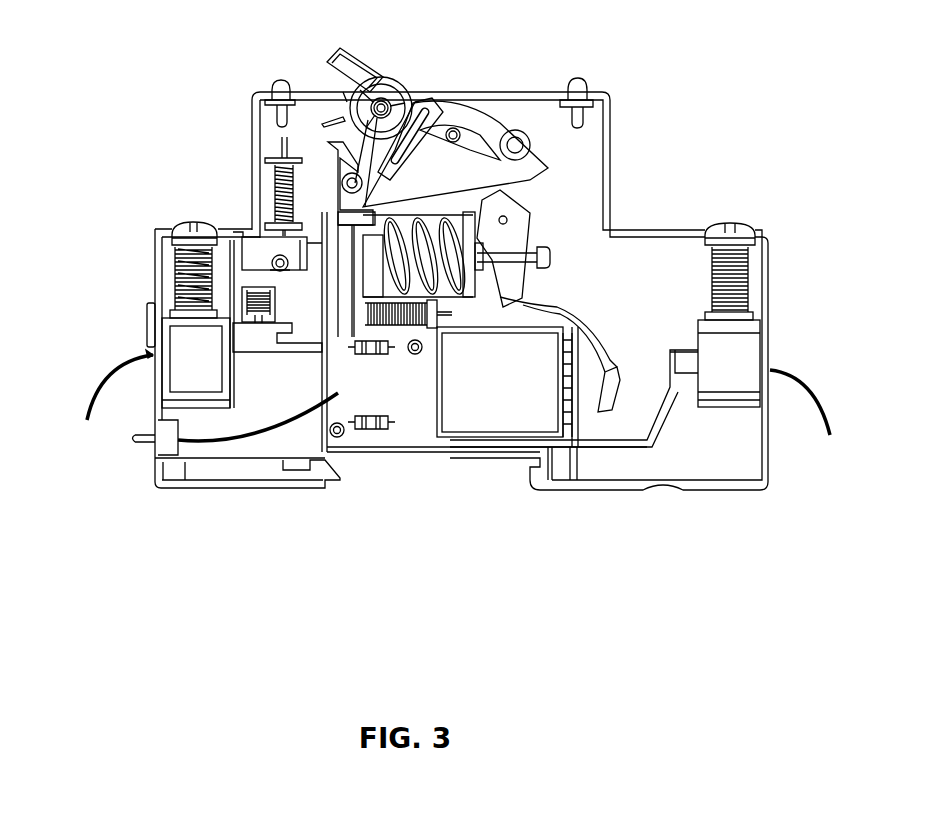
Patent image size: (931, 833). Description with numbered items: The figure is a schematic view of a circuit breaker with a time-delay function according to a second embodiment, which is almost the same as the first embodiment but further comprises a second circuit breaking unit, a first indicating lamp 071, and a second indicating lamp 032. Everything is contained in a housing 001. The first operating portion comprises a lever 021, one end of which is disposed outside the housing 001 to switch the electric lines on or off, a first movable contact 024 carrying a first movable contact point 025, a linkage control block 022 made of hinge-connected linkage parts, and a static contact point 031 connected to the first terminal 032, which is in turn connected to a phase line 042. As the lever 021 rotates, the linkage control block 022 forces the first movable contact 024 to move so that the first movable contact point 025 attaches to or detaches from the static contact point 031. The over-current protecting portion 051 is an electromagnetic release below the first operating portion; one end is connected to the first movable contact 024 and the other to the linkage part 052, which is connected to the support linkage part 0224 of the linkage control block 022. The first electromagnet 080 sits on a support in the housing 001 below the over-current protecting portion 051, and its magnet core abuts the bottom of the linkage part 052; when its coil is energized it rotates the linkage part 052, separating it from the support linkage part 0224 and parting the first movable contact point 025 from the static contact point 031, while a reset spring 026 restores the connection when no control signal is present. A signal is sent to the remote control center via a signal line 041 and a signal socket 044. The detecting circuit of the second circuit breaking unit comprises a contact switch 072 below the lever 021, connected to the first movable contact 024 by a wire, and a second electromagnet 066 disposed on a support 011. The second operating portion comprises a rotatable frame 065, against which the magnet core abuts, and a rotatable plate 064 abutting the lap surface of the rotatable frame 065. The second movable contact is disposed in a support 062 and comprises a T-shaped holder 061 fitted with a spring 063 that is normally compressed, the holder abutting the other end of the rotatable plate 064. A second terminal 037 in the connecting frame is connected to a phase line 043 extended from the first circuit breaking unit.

The housing 001 is at (710, 487).
The support 011 is at (273, 152).
The lever 021 is at (363, 63).
The linkage control block 022 is at (440, 117).
The support linkage part 0224 is at (420, 158).
The first movable contact 024 is at (572, 305).
The first movable contact point 025 is at (615, 377).
The reset spring 026 is at (368, 140).
The static contact point 031 is at (680, 380).
The first terminal 032 is at (573, 90).
The second terminal 037 is at (185, 368).
The signal line 041 is at (236, 438).
The phase line 042 is at (813, 407).
The phase line 043 is at (107, 370).
The signal socket 044 is at (173, 433).
The over-current protecting portion 051 is at (453, 252).
The linkage part 052 is at (277, 237).
The T-shaped holder 061 is at (233, 335).
The support 062 is at (240, 300).
The spring 063 is at (248, 287).
The rotatable plate 064 is at (252, 268).
The rotatable frame 065 is at (342, 255).
The second electromagnet 066 is at (270, 187).
The first indicating lamp 071 is at (283, 83).
The contact switch 072 is at (328, 112).
The first electromagnet 080 is at (413, 323).